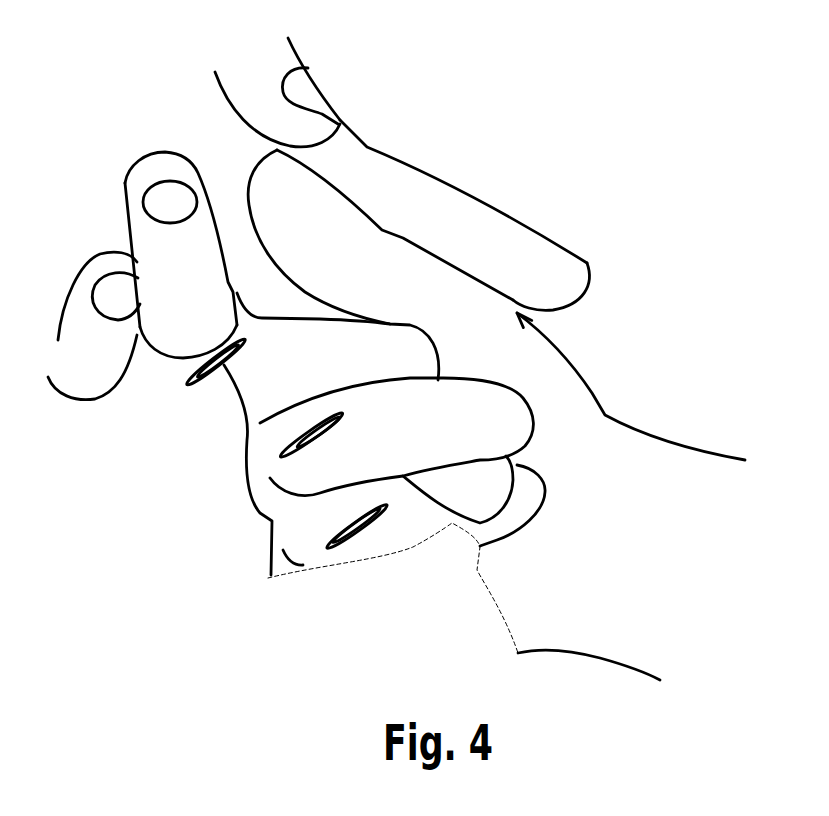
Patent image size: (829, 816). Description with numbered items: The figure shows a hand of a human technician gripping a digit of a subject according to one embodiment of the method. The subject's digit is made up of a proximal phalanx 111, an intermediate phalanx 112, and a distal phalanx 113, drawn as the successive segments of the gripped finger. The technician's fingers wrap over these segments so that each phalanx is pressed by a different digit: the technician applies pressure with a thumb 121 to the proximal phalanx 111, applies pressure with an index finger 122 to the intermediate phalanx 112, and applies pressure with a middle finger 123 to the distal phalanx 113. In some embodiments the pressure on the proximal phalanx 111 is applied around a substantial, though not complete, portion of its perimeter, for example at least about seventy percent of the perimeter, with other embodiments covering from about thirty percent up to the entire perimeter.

The proximal phalanx 111 is at (320, 312).
The intermediate phalanx 112 is at (413, 387).
The distal phalanx 113 is at (462, 470).
The thumb 121 is at (318, 213).
The index finger 122 is at (397, 348).
The middle finger 123 is at (488, 417).